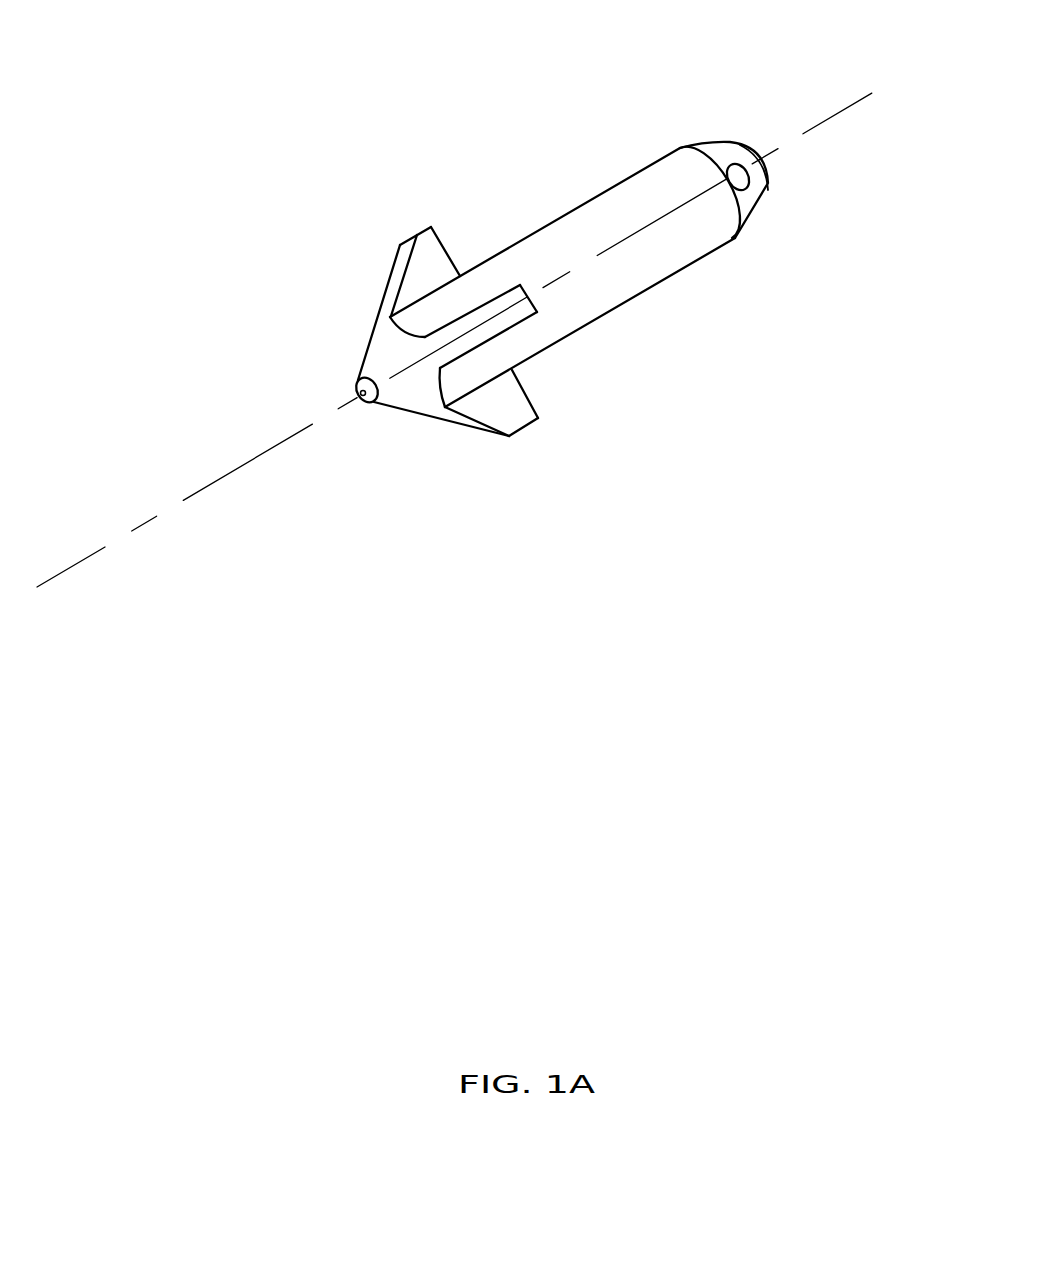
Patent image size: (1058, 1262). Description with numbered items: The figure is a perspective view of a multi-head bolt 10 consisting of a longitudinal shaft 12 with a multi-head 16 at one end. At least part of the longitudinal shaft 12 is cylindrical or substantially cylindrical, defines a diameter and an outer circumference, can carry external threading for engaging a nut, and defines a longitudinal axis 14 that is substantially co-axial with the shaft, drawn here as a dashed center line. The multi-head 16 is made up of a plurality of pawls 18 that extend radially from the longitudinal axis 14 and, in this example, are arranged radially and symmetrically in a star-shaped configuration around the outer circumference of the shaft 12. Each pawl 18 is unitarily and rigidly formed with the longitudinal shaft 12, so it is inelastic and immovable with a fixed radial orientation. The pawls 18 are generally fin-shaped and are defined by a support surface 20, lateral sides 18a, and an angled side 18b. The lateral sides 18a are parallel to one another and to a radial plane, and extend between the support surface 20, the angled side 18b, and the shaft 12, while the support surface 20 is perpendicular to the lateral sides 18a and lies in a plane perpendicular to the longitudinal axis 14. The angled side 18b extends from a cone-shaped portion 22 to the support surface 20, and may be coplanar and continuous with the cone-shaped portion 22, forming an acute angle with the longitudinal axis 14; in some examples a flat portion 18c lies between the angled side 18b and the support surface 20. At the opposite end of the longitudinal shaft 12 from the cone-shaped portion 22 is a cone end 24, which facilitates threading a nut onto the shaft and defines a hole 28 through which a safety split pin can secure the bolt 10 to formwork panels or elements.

The multi-head bolt 10 is at (536, 281).
The longitudinal shaft 12 is at (617, 295).
The longitudinal axis 14 is at (188, 497).
The multi-head 16 is at (401, 320).
The pawls 18 is at (425, 280).
The lateral sides 18a is at (444, 278).
The angled side 18b is at (387, 300).
The flat portion 18c is at (408, 236).
The support surface 20 is at (442, 240).
The cone-shaped portion 22 is at (390, 399).
The cone end 24 is at (769, 188).
The hole 28 is at (736, 164).